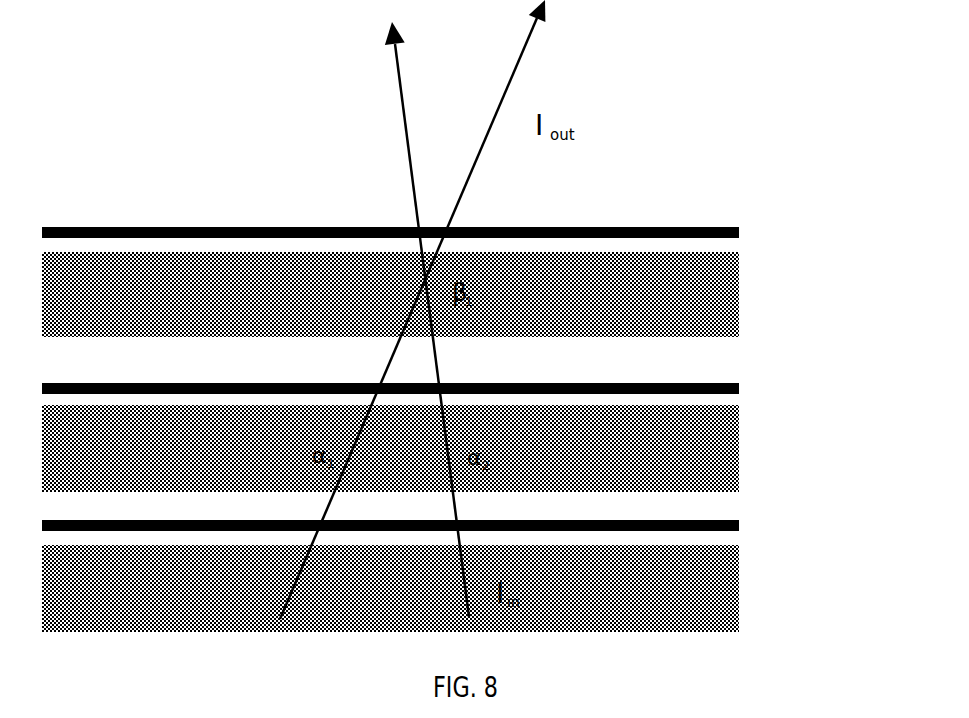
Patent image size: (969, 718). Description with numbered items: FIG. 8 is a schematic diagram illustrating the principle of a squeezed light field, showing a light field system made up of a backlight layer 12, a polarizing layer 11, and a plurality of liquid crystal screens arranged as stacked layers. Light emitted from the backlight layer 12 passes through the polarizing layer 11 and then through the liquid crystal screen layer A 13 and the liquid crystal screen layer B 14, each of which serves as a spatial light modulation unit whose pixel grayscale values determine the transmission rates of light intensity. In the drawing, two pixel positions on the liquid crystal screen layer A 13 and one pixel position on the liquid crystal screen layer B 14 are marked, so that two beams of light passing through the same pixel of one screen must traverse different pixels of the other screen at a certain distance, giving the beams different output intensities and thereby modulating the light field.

The polarizing layer 11 is at (739, 227).
The backlight layer 12 is at (739, 615).
The liquid crystal screen layer A 13 is at (739, 465).
The liquid crystal screen layer B 14 is at (739, 307).